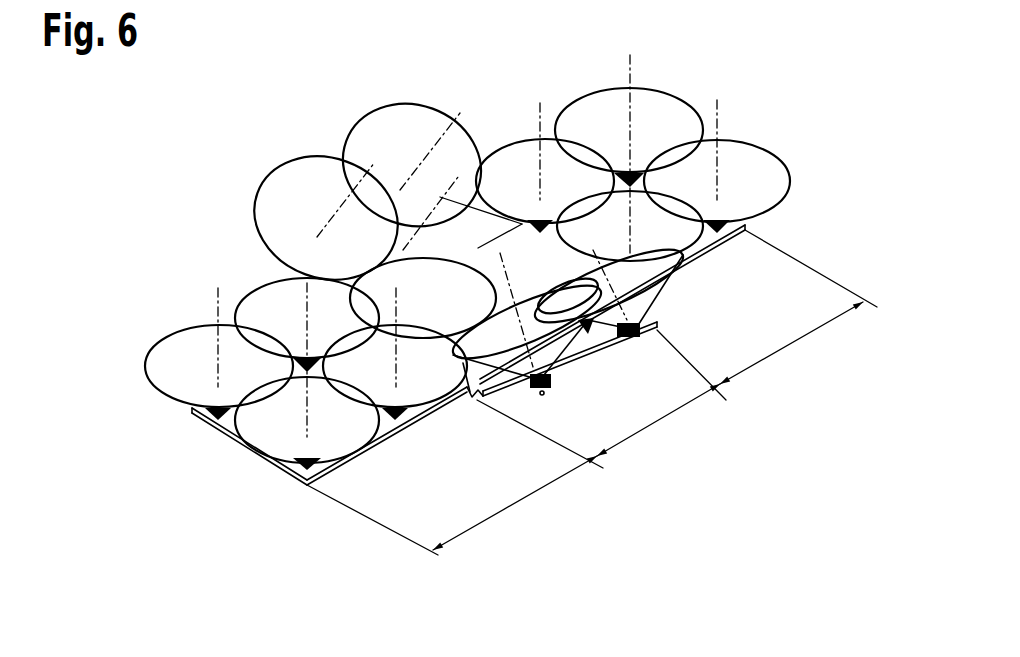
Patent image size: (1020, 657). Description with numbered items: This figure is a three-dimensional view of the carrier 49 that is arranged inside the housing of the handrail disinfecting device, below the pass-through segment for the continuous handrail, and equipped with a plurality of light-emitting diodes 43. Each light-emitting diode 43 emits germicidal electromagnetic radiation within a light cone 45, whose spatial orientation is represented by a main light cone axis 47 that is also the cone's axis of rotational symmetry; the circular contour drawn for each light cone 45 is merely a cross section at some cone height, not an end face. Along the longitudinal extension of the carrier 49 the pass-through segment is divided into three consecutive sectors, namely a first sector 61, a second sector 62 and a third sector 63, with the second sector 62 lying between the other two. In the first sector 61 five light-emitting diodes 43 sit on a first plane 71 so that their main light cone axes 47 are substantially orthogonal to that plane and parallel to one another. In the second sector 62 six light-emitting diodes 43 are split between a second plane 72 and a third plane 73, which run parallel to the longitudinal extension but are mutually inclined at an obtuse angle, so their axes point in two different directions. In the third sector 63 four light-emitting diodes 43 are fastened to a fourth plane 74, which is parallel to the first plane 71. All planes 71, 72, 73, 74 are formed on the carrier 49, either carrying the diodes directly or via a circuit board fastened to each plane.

The light-emitting diode 43 is at (741, 232).
The light cone 45 is at (756, 186).
The main light cone axis 47 is at (720, 104).
The carrier 49 is at (388, 427).
The first sector 61 is at (510, 505).
The second sector 62 is at (648, 423).
The third sector 63 is at (787, 343).
The first plane 71 is at (207, 437).
The second plane 72 is at (590, 348).
The third plane 73 is at (340, 272).
The fourth plane 74 is at (522, 218).